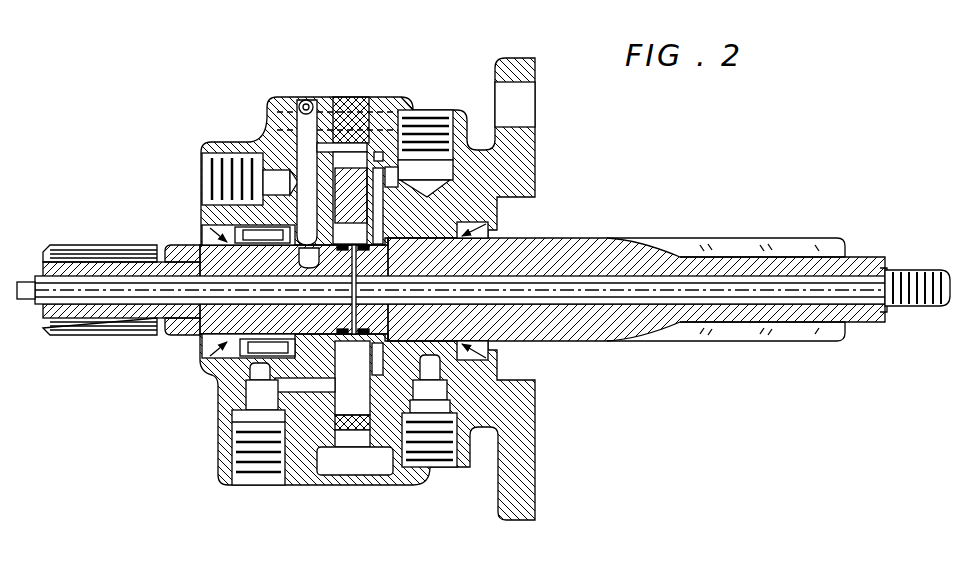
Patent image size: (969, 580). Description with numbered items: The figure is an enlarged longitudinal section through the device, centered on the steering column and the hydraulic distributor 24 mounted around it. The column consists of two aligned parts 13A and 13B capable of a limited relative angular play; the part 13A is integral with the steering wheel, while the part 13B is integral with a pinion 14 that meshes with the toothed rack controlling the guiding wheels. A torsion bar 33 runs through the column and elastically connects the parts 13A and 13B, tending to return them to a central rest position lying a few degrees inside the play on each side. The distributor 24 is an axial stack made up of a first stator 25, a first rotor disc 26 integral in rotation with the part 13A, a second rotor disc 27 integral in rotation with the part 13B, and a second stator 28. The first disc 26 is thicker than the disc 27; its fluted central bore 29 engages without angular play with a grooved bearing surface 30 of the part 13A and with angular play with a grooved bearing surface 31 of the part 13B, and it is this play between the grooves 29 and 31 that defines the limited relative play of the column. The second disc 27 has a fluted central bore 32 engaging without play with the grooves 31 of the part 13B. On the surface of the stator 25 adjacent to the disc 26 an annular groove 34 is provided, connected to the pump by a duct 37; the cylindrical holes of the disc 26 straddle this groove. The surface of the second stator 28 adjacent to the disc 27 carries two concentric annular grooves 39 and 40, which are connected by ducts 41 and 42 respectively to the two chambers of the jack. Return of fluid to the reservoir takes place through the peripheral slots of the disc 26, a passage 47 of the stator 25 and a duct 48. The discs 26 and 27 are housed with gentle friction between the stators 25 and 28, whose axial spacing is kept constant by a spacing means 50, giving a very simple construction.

The first part of the steering column 13A is at (179, 242).
The second part of the steering column 13B is at (596, 236).
The pinion 14 is at (683, 244).
The distributor 24 is at (485, 61).
The first stator 25 is at (300, 96).
The first rotor disc 26 is at (347, 163).
The second rotor disc 27 is at (376, 150).
The second stator 28 is at (395, 106).
The fluted central bore 29 is at (352, 252).
The grooved bearing surface 30 is at (352, 378).
The grooved bearing surface 31 is at (364, 382).
The fluted central bore 32 is at (370, 252).
The torsion bar 33 is at (745, 282).
The annular groove 34 is at (331, 390).
The duct 37 is at (261, 482).
The annular groove 39 is at (397, 190).
The annular groove 40 is at (395, 362).
The duct 41 is at (440, 120).
The duct 42 is at (448, 470).
The passage 47 is at (298, 148).
The duct 48 is at (200, 177).
The spacing means 50 is at (356, 95).